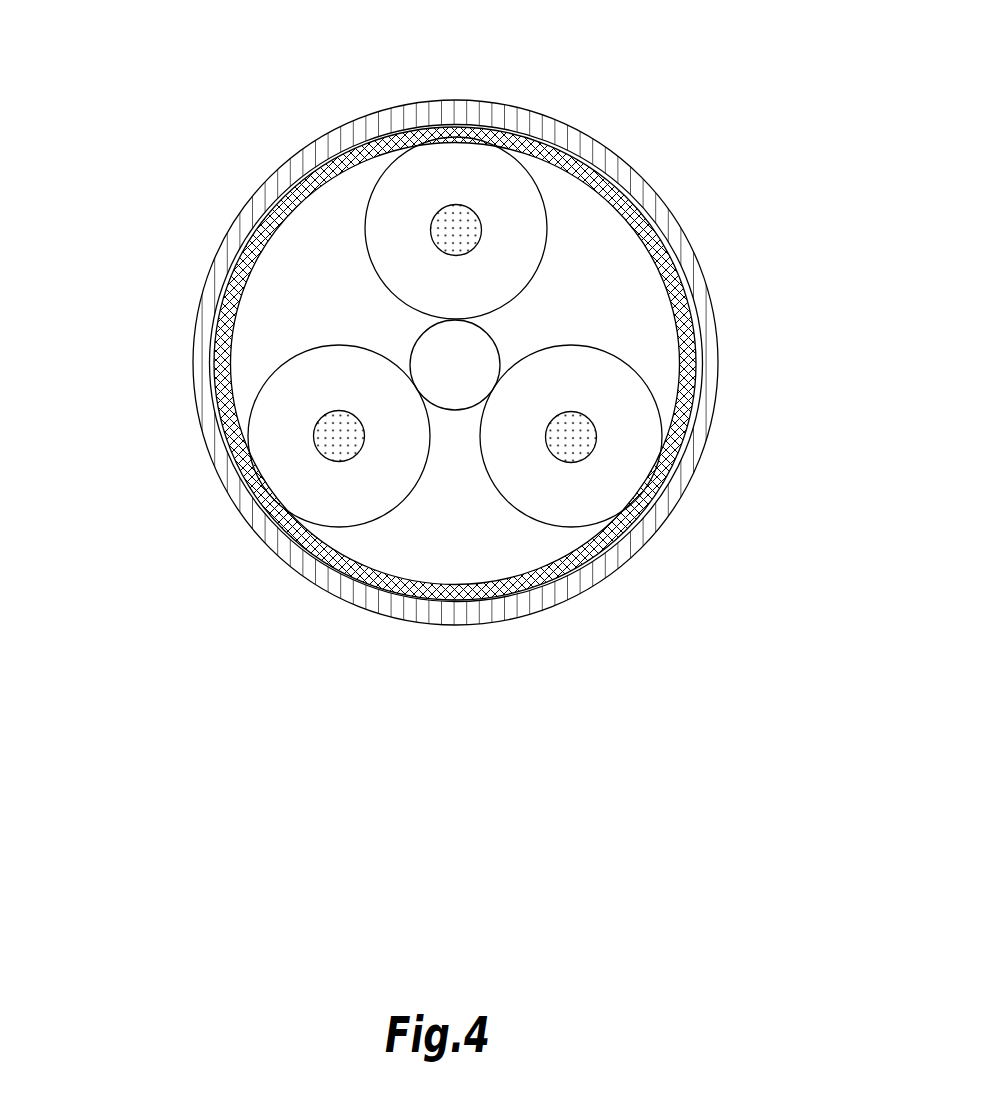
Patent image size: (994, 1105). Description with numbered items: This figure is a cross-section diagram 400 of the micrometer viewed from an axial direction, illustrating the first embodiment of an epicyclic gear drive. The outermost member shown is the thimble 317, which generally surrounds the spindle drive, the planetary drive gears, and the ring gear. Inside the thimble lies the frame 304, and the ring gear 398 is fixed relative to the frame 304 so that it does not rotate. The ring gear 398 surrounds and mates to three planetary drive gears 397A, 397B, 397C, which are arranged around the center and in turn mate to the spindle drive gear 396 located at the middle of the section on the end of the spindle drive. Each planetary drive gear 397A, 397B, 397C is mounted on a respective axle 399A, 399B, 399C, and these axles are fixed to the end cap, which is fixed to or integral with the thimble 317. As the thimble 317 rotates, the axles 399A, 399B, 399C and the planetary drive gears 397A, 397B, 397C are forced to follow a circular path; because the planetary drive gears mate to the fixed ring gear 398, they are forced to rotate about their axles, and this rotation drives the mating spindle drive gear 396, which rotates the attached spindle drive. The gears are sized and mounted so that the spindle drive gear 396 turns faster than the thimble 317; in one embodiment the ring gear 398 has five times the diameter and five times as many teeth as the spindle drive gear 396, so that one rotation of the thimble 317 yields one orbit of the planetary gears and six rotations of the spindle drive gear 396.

The cross-section diagram 400 is at (612, 103).
The thimble 317 is at (587, 145).
The frame 304 is at (647, 223).
The ring gear 398 is at (677, 308).
The spindle drive gear 396 is at (417, 343).
The planetary drive gear 397A is at (413, 172).
The planetary drive gear 397B is at (298, 492).
The planetary drive gear 397C is at (615, 413).
The axle 399A is at (458, 227).
The axle 399B is at (320, 432).
The axle 399C is at (577, 447).